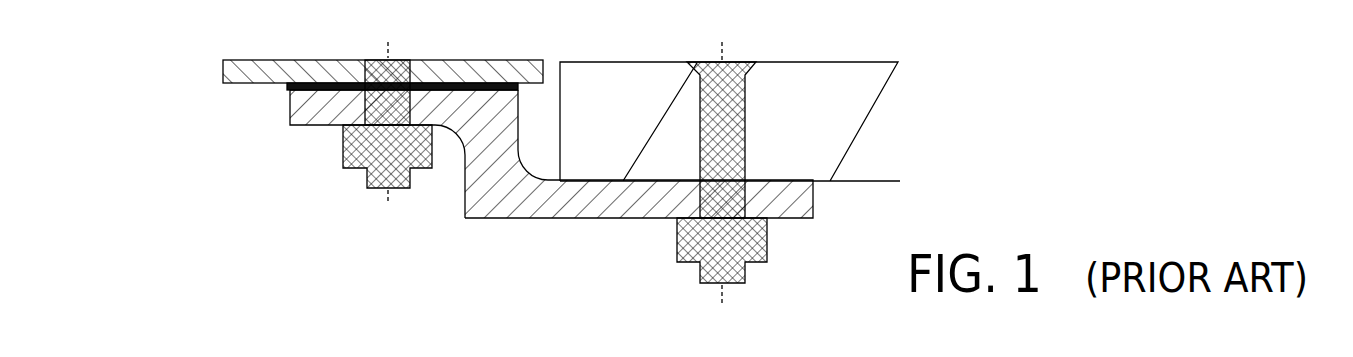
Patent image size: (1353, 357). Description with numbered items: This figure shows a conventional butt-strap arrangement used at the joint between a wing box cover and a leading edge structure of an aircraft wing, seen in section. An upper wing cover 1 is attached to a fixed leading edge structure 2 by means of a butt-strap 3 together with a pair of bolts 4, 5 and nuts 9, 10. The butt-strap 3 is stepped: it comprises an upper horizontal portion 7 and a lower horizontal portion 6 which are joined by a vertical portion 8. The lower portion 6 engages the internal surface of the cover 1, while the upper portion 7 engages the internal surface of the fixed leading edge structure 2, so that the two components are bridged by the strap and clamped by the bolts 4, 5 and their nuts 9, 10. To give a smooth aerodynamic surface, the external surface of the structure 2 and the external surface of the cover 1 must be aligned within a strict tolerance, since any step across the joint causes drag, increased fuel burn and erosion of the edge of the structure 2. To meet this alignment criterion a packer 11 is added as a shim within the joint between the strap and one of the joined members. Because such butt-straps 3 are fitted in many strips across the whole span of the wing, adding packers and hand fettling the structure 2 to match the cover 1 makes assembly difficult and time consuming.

The upper wing cover 1 is at (845, 80).
The fixed leading edge structure 2 is at (292, 62).
The butt-strap 3 is at (533, 242).
The bolt 4 is at (745, 132).
The bolt 5 is at (388, 70).
The lower horizontal portion 6 is at (648, 218).
The upper horizontal portion 7 is at (302, 127).
The vertical portion 8 is at (472, 195).
The nut 9 is at (762, 240).
The nut 10 is at (357, 169).
The packer 11 is at (326, 82).